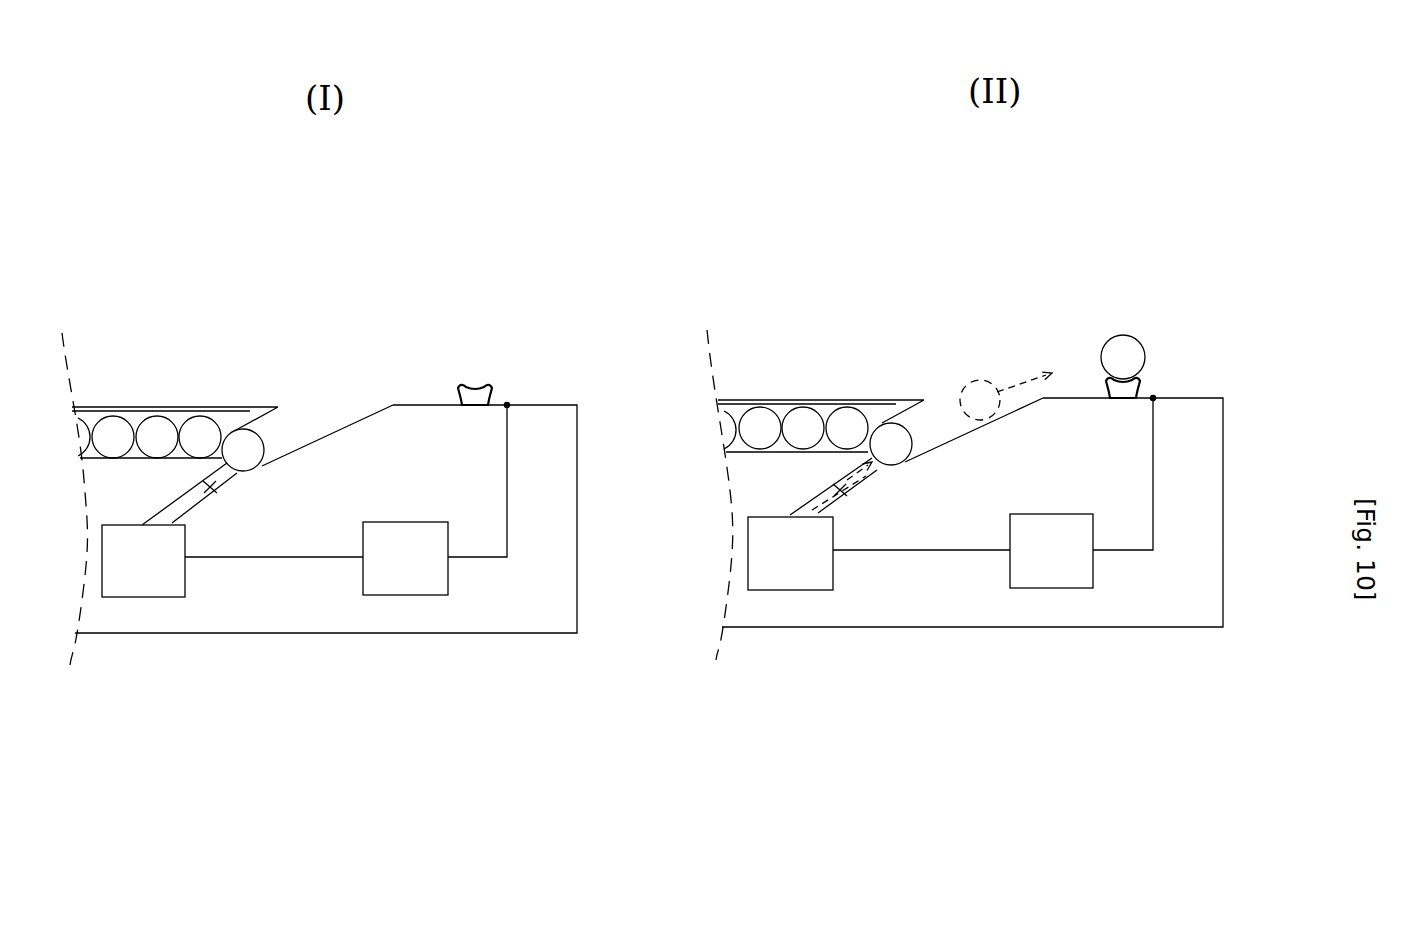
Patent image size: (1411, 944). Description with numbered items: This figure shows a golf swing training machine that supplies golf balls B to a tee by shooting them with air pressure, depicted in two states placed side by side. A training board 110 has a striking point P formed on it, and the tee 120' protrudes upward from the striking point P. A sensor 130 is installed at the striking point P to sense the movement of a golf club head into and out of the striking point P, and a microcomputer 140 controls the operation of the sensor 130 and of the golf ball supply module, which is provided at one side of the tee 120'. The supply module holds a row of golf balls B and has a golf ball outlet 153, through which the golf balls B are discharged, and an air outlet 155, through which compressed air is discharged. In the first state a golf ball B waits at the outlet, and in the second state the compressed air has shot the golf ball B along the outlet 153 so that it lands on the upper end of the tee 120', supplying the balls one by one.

The training board 110 is at (522, 411).
The tee 120' is at (854, 335).
The sensor 130 is at (507, 407).
The microcomputer 140 is at (420, 575).
The golf ball outlet 153 is at (305, 428).
The air outlet 155 is at (210, 487).
The golf ball B is at (200, 438).
The striking point P is at (527, 332).